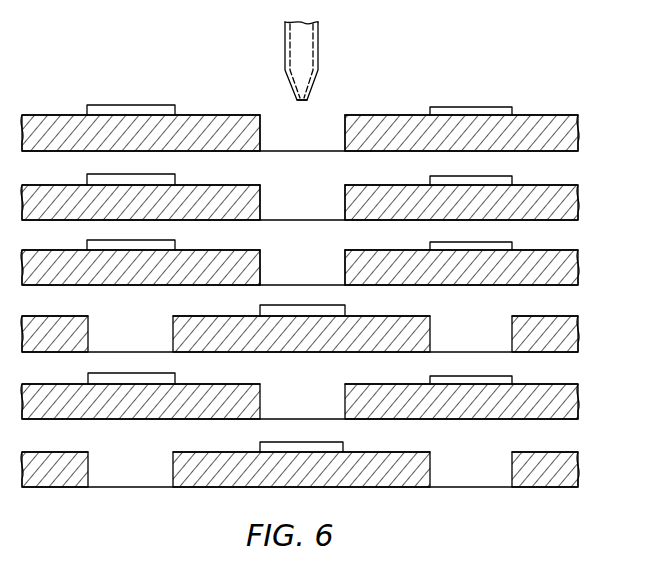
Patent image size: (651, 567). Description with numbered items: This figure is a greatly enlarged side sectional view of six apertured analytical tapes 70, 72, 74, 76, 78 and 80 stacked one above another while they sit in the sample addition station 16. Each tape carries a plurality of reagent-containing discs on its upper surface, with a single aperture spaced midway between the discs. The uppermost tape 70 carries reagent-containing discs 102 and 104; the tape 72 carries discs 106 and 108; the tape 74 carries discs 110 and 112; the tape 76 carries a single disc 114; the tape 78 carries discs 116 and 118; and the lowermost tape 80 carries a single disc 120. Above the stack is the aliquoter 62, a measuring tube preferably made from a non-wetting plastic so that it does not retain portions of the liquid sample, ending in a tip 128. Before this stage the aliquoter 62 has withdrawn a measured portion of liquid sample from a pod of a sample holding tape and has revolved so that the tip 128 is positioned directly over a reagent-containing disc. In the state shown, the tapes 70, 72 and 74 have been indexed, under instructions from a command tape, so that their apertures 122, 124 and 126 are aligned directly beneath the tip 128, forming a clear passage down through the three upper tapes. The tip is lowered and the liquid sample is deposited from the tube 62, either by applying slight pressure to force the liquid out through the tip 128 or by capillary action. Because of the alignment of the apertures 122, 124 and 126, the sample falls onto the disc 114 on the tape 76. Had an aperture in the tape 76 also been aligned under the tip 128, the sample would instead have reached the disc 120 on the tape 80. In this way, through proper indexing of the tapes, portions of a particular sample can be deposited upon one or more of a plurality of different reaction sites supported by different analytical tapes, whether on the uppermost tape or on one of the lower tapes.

The sample addition station 16 is at (418, 94).
The aliquoter 62 is at (318, 47).
The tip 128 is at (310, 88).
The analytical tape 70 is at (580, 125).
The analytical tape 72 is at (580, 200).
The analytical tape 74 is at (580, 265).
The analytical tape 76 is at (580, 332).
The analytical tape 78 is at (580, 399).
The analytical tape 80 is at (580, 465).
The reagent-containing disc 102 is at (131, 105).
The reagent-containing disc 104 is at (471, 107).
The reagent-containing disc 106 is at (177, 176).
The reagent-containing disc 108 is at (508, 176).
The reagent-containing disc 110 is at (172, 240).
The reagent-containing disc 112 is at (508, 242).
The reagent-containing disc 114 is at (340, 305).
The reagent-containing disc 116 is at (172, 373).
The reagent-containing disc 118 is at (497, 370).
The reagent-containing disc 120 is at (330, 442).
The aperture 122 is at (286, 152).
The aperture 124 is at (280, 205).
The aperture 126 is at (270, 270).